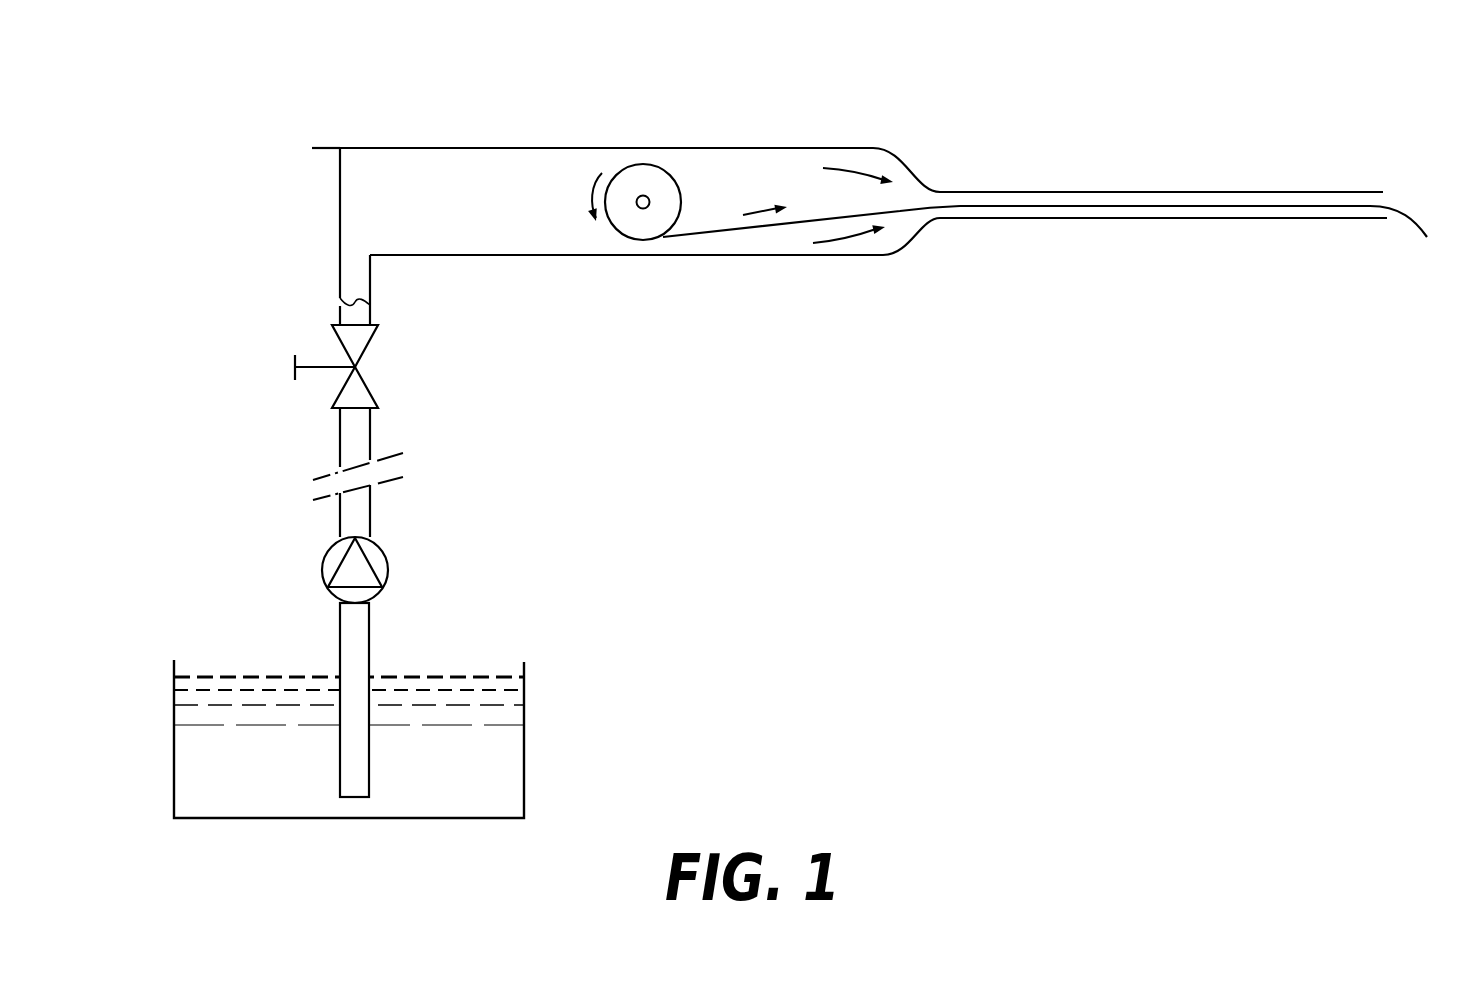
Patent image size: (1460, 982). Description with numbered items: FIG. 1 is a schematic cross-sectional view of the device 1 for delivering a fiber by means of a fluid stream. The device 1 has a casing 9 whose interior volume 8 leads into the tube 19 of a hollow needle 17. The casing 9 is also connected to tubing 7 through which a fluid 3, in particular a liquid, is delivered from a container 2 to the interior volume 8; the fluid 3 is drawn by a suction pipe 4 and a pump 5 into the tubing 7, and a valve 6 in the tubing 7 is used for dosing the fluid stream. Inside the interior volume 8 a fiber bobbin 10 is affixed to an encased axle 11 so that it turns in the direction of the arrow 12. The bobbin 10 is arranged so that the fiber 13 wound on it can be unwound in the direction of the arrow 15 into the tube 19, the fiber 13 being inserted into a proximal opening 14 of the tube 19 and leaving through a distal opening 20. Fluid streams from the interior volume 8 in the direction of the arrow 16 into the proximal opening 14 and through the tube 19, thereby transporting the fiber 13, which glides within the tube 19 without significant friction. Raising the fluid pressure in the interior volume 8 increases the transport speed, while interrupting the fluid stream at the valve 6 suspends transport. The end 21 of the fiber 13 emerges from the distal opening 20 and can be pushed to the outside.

The device 1 is at (320, 129).
The container 2 is at (525, 667).
The fluid 3 is at (497, 772).
The suction pipe 4 is at (345, 662).
The pump 5 is at (322, 563).
The valve 6 is at (370, 368).
The tubing 7 is at (340, 273).
The interior volume 8 is at (512, 175).
The casing 9 is at (430, 147).
The fiber bobbin 10 is at (668, 187).
The encased axle 11 is at (643, 195).
The arrow 12 is at (594, 222).
The fiber 13 is at (728, 230).
The proximal opening 14 is at (922, 195).
The arrow 15 is at (773, 205).
The arrow 16 is at (877, 173).
The hollow needle 17 is at (1125, 192).
The tube 19 is at (1192, 199).
The distal opening 20 is at (1385, 200).
The end 21 is at (1408, 226).